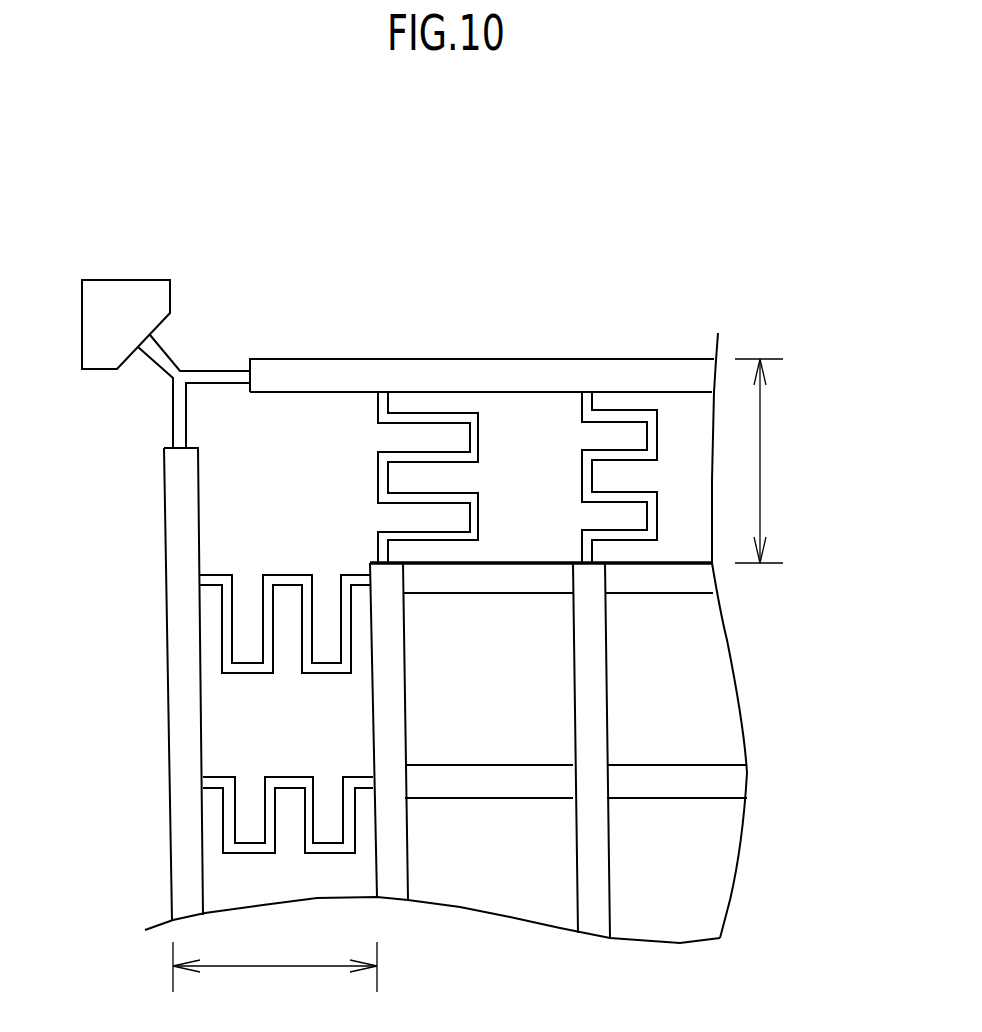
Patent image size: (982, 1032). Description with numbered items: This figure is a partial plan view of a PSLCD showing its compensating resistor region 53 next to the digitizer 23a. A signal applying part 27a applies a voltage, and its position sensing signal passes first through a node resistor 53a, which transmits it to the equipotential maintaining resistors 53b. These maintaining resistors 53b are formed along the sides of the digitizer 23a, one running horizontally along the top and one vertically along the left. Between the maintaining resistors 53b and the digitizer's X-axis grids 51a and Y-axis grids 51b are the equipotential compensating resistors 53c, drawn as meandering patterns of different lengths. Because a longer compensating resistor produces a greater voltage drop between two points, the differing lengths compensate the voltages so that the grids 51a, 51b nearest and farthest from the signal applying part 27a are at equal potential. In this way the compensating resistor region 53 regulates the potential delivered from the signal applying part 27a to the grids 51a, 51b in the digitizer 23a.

The digitizer 23a is at (680, 563).
The signal applying part 27a is at (120, 298).
The X-axis grids 51a is at (490, 583).
The Y-axis grids 51b is at (393, 727).
The compensating resistor region 53 is at (487, 687).
The node resistor 53a is at (167, 360).
The equipotential maintaining resistors 53b is at (505, 370).
The equipotential compensating resistors 53c is at (582, 482).